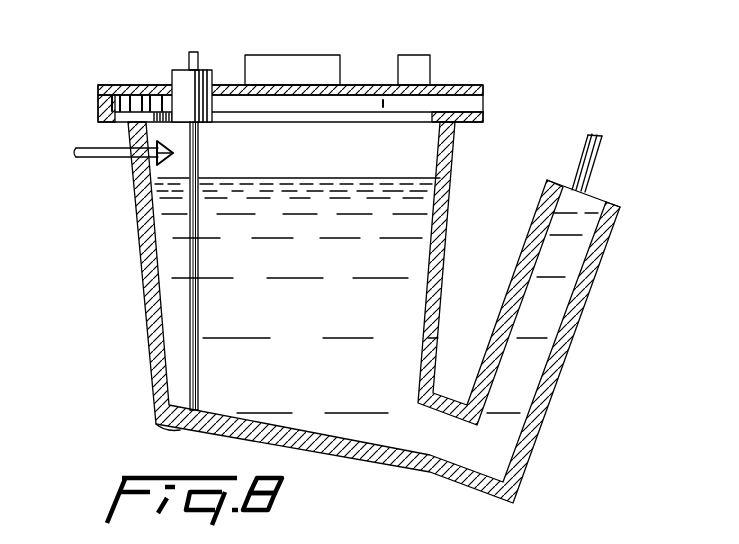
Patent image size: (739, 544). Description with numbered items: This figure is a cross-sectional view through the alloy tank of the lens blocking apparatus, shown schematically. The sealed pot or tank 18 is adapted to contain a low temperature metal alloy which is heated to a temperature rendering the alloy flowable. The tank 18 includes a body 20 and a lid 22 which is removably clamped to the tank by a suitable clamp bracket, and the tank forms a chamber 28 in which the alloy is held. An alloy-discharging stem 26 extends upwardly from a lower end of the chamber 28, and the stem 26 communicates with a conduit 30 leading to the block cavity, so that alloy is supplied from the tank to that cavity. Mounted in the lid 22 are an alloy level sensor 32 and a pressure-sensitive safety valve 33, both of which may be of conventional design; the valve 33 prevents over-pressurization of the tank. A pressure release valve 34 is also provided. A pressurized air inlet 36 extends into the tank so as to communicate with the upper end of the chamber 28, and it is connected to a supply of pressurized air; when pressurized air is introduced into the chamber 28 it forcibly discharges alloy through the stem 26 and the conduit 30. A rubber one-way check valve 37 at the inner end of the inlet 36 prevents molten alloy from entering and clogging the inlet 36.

The tank 18 is at (147, 321).
The body 20 is at (180, 430).
The lid 22 is at (138, 85).
The alloy-discharging stem 26 is at (572, 348).
The chamber 28 is at (425, 158).
The conduit 30 is at (602, 152).
The alloy level sensor 32 is at (213, 64).
The pressure-sensitive safety valve 33 is at (420, 62).
The pressure release valve 34 is at (313, 62).
The pressurized air inlet 36 is at (86, 158).
The rubber one-way check valve 37 is at (163, 162).